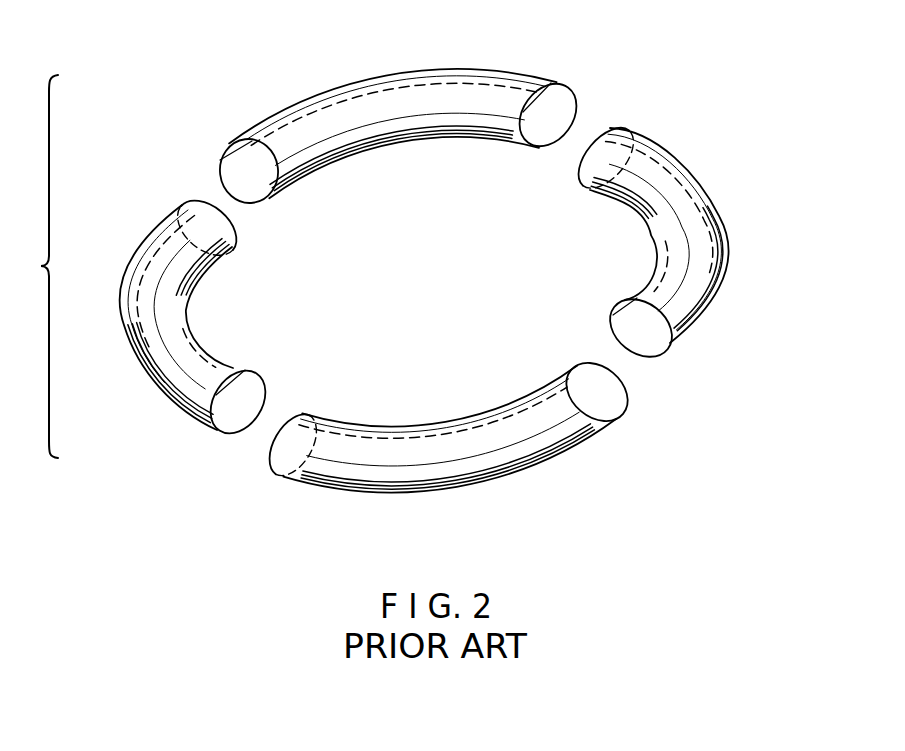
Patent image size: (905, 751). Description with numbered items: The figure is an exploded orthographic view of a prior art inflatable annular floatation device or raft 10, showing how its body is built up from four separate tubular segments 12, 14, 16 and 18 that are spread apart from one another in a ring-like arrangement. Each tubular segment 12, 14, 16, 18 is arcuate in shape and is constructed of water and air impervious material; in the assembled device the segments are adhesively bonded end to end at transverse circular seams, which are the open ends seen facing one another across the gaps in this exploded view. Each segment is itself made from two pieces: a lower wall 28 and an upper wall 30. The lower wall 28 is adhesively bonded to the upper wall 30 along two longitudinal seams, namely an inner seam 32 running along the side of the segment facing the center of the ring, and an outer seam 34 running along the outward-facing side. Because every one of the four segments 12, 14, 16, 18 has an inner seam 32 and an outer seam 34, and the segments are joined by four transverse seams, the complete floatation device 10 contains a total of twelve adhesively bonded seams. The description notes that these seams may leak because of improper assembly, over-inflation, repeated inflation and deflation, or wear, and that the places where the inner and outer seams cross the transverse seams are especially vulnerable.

The inflatable annular floatation device 10 is at (648, 68).
The tubular segment 12 is at (252, 110).
The tubular segment 14 is at (112, 338).
The tubular segment 16 is at (460, 500).
The tubular segment 18 is at (740, 255).
The lower wall 28 is at (280, 182).
The upper wall 30 is at (510, 100).
The inner seam 32 is at (483, 132).
The outer seam 34 is at (330, 99).